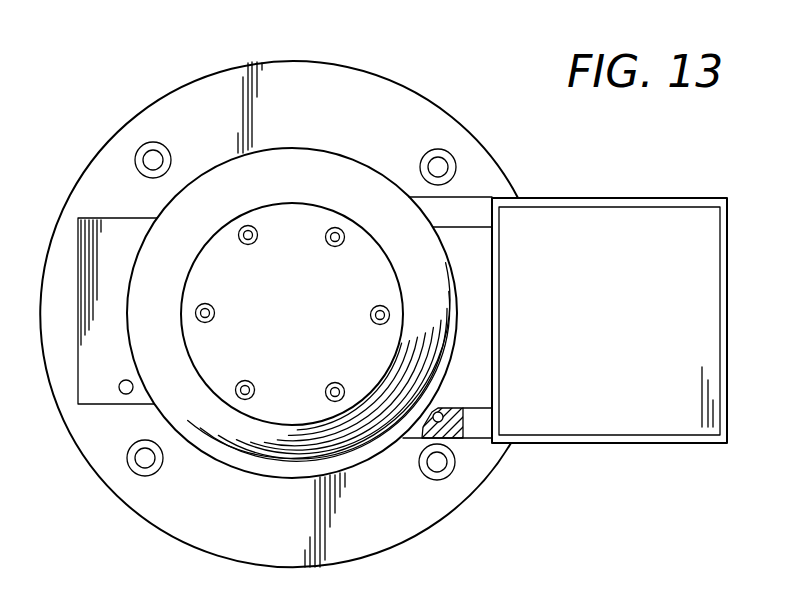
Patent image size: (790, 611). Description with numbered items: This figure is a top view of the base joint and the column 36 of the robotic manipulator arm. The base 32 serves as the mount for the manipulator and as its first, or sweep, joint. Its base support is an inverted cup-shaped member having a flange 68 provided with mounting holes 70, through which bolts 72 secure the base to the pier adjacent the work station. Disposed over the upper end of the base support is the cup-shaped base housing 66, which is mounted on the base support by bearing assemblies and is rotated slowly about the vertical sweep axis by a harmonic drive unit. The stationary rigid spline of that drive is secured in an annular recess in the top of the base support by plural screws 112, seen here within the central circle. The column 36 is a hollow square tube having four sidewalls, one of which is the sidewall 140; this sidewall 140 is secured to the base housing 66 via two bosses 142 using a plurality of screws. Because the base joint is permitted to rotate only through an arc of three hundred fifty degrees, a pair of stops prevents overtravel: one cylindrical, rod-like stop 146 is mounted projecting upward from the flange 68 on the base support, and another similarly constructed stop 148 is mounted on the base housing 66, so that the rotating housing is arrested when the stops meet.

The base 32 is at (308, 359).
The column 36 is at (632, 285).
The base housing 66 is at (333, 160).
The flange 68 is at (337, 548).
The mounting holes 70 is at (140, 148).
The bolts 72 is at (160, 153).
The screws 112 is at (327, 243).
The sidewall 140 is at (500, 310).
The bosses 142 is at (482, 228).
The stop 146 is at (127, 380).
The stop 148 is at (430, 412).